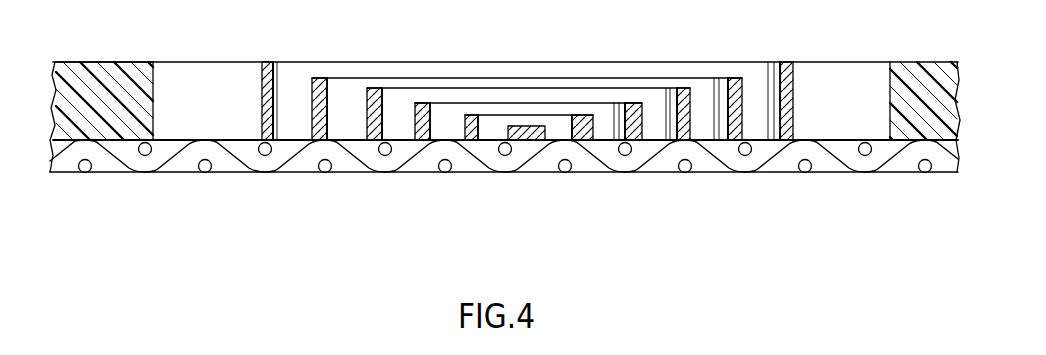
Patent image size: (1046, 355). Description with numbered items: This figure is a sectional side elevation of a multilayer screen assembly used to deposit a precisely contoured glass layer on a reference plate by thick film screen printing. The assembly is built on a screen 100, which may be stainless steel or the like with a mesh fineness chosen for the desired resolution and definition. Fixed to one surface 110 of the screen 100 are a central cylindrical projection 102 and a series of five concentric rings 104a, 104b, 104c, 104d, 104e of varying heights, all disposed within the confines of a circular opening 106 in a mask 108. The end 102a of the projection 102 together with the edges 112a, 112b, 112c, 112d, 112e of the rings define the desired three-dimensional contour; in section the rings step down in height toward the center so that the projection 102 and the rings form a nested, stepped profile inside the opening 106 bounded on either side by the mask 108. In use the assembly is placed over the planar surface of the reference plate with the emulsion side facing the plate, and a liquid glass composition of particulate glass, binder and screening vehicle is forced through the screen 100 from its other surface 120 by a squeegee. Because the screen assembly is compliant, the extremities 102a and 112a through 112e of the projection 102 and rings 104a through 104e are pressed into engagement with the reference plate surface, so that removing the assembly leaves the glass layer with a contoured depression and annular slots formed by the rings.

The screen 100 is at (779, 158).
The central cylindrical projection 102 is at (547, 120).
The end of the projection 102a is at (530, 126).
The outer ring 104a is at (262, 88).
The concentric ring 104b is at (312, 92).
The concentric ring 104c is at (367, 105).
The concentric ring 104d is at (415, 118).
The concentric ring 104e is at (465, 129).
The circular opening 106 is at (890, 103).
The mask 108 is at (915, 63).
The surface of the screen 110 is at (183, 139).
The edge of the ring 112a is at (787, 62).
The edge of the ring 112b is at (730, 78).
The edge of the ring 112c is at (679, 88).
The edge of the ring 112d is at (631, 103).
The edge of the ring 112e is at (581, 115).
The other surface of the screen 120 is at (677, 174).